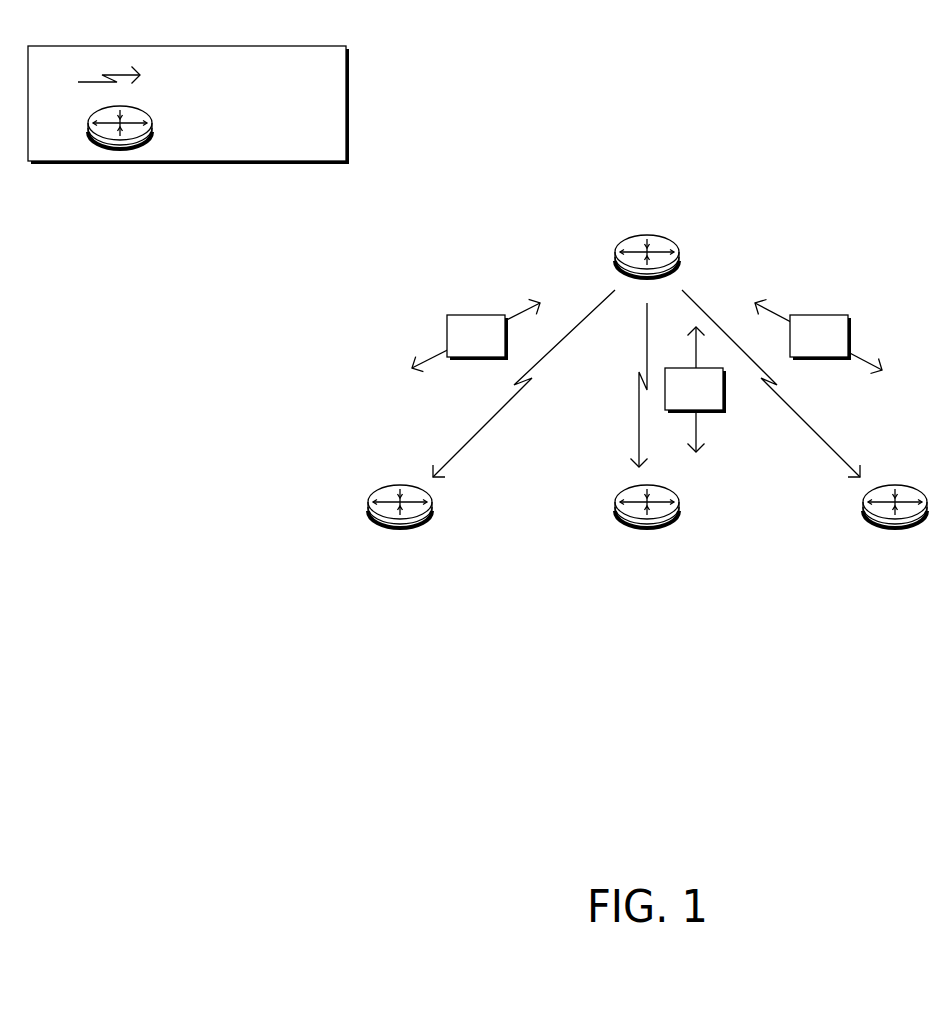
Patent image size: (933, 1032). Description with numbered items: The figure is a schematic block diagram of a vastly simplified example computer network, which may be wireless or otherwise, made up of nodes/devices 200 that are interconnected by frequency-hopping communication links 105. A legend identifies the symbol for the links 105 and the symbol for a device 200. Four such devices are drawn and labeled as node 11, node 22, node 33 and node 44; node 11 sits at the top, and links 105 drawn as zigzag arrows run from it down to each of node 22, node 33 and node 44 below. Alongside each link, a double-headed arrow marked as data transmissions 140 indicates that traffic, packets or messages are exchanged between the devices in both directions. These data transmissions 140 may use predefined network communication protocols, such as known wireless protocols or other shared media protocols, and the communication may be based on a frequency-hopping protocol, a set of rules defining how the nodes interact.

The node/device 11 is at (637, 244).
The node/device 22 is at (400, 524).
The node/device 33 is at (647, 524).
The node/device 44 is at (895, 524).
The frequency-hopping communication links 105 is at (187, 77).
The data transmissions 140 is at (460, 347).
The nodes/devices 200 is at (199, 127).